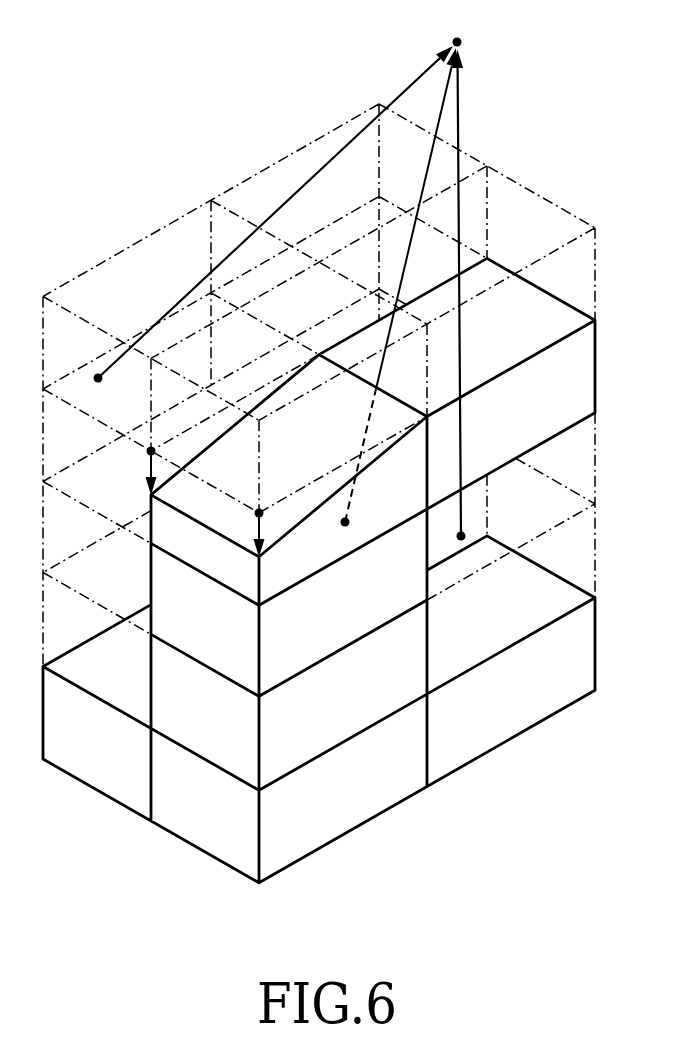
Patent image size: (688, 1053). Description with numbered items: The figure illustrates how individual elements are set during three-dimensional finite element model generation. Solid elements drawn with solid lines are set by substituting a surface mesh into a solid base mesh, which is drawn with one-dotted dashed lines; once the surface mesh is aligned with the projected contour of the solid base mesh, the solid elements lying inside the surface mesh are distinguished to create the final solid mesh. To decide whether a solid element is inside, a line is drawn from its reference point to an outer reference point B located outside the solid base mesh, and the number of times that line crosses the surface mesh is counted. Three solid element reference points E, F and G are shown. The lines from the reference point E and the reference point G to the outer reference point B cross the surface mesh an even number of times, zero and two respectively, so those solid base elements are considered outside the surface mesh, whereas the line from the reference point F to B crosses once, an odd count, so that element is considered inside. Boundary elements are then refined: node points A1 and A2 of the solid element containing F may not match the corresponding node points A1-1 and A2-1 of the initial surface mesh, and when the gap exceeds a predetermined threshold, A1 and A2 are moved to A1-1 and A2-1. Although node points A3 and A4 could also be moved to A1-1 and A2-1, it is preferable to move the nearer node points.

The outer reference point B is at (459, 29).
The solid element reference point E is at (274, 222).
The solid element reference point F is at (387, 293).
The solid element reference point G is at (451, 299).
The node point A1 is at (170, 406).
The node point of initial surface mesh A1-1 is at (122, 477).
The node point A2 is at (239, 502).
The node point of initial surface mesh A2-1 is at (286, 545).
The node point A3 is at (97, 573).
The node point A4 is at (205, 619).